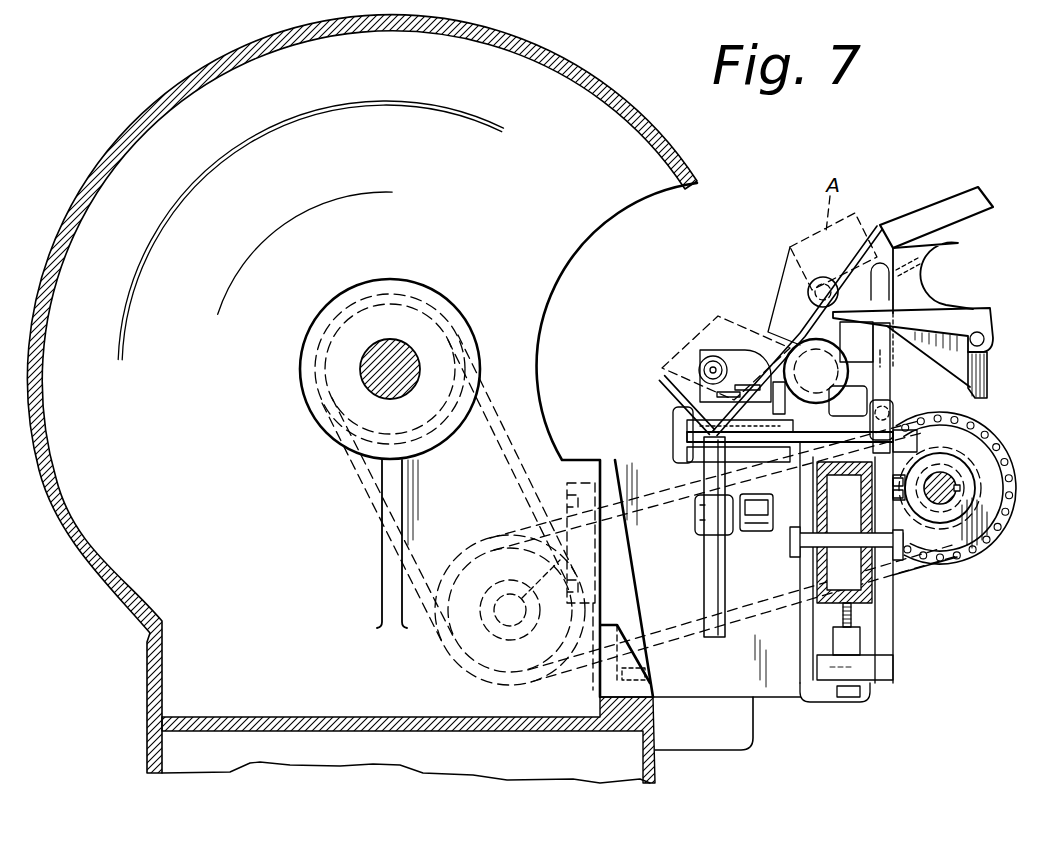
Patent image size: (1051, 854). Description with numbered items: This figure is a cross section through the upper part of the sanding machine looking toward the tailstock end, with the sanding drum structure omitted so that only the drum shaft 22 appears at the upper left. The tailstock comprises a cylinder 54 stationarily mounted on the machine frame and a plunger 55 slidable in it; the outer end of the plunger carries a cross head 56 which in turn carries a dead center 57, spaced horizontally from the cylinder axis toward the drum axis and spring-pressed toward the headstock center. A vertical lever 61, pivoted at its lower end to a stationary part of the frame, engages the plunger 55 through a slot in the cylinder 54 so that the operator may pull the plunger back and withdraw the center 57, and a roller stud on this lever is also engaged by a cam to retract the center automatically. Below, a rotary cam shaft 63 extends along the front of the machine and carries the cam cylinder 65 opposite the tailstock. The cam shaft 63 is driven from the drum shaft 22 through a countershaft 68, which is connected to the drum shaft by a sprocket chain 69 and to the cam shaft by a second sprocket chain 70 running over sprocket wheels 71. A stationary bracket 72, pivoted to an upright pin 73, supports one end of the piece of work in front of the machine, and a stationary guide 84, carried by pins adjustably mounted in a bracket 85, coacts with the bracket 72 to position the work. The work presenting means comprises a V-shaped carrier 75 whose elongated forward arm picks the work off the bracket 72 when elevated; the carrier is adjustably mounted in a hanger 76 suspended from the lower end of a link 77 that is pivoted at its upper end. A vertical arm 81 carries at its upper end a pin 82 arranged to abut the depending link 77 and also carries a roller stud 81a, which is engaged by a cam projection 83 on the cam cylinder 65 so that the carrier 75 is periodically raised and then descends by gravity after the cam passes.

The shaft 22 is at (410, 390).
The cylinder 54 is at (828, 362).
The plunger 55 is at (820, 399).
The cross head 56 is at (758, 346).
The dead center 57 is at (708, 364).
The vertical lever 61 is at (927, 300).
The rotary shaft 63 is at (953, 480).
The cam cylinder 65 is at (980, 490).
The countershaft 68 is at (517, 622).
The sprocket chain 69 is at (373, 507).
The sprocket chain 70 is at (917, 575).
The sprocket wheels 71 is at (475, 648).
The stationary bracket 72 is at (940, 320).
The upright pin 73 is at (988, 385).
The V-shaped carrier 75 is at (840, 286).
The hanger 76 is at (703, 473).
The link 77 is at (673, 420).
The vertical arm 81 is at (883, 608).
The roller stud 81a is at (937, 479).
The pin 82 is at (893, 410).
The cam projection 83 is at (908, 520).
The stationary guide 84 is at (933, 208).
The bracket 85 is at (808, 285).